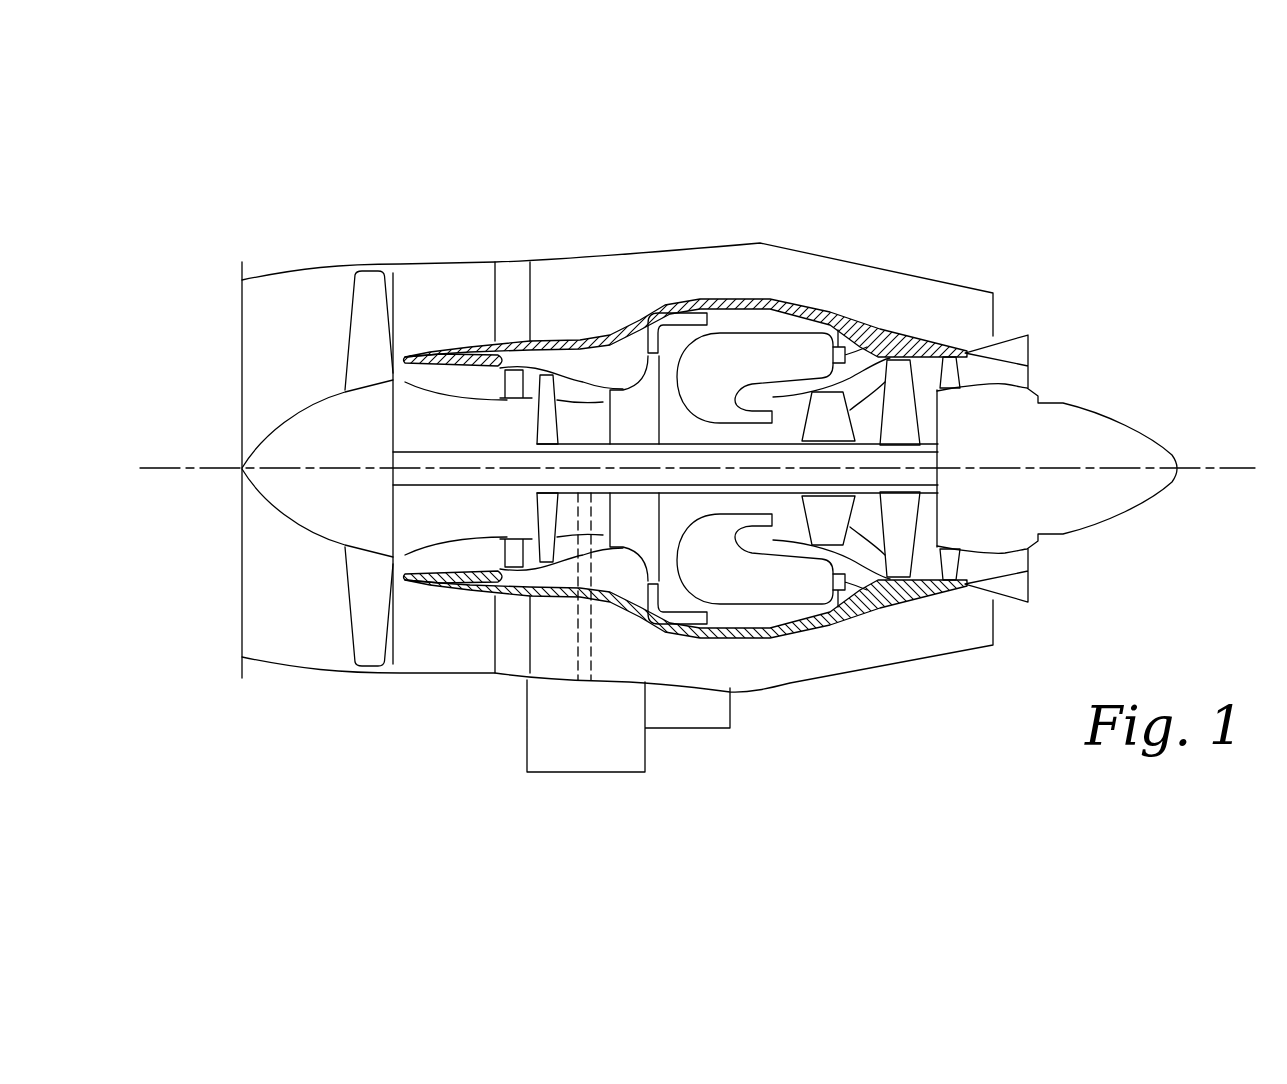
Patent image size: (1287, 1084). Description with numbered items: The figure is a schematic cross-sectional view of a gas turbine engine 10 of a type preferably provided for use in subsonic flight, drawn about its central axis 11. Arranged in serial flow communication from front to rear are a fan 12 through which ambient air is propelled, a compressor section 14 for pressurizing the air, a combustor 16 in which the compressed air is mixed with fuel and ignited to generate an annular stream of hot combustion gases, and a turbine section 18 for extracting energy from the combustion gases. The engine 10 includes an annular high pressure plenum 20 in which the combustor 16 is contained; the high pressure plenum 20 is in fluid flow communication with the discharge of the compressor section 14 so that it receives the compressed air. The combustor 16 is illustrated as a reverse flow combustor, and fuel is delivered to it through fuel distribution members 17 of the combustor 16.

The gas turbine engine 10 is at (887, 168).
The engine centerline axis 11 is at (1213, 465).
The fan 12 is at (367, 597).
The compressor section 14 is at (575, 388).
The combustor 16 is at (773, 355).
The fuel distribution members 17 is at (873, 347).
The turbine section 18 is at (862, 520).
The high pressure plenum 20 is at (790, 323).